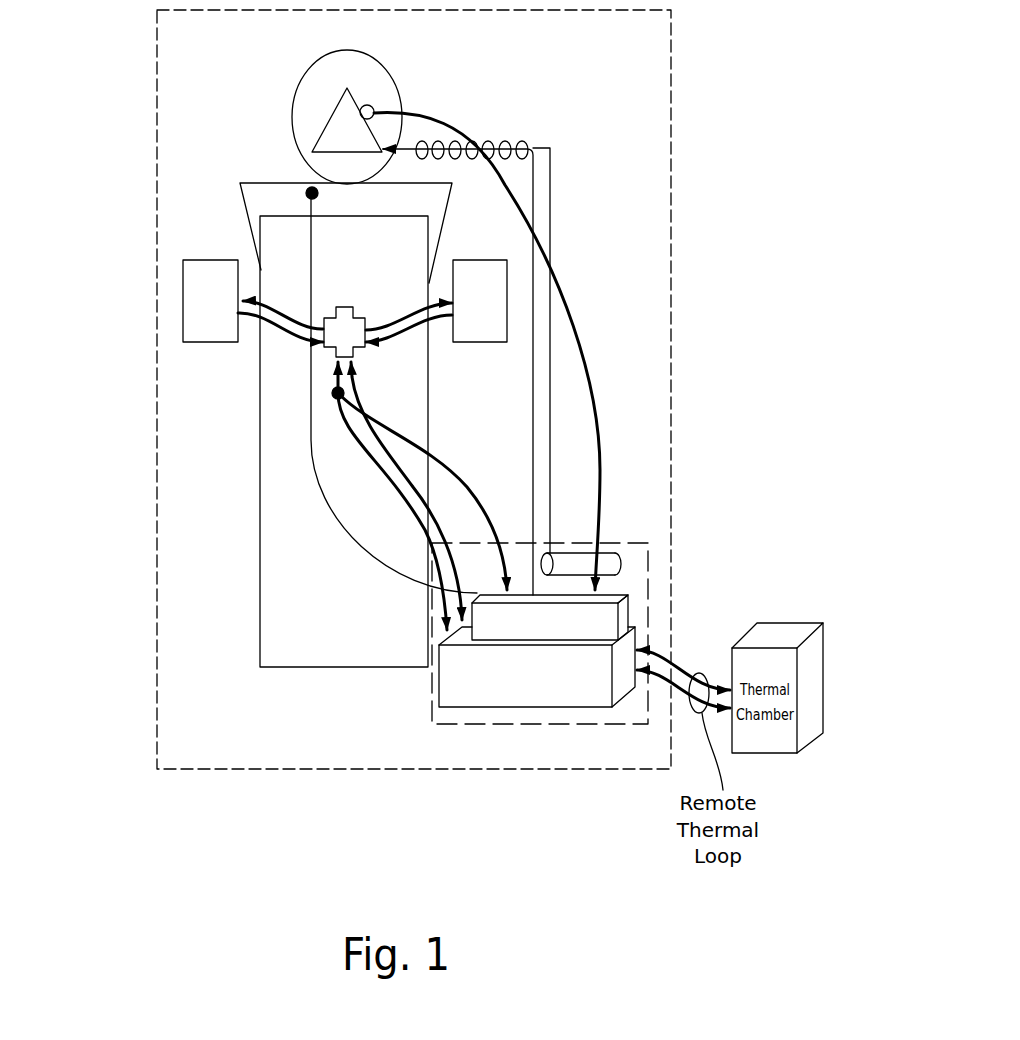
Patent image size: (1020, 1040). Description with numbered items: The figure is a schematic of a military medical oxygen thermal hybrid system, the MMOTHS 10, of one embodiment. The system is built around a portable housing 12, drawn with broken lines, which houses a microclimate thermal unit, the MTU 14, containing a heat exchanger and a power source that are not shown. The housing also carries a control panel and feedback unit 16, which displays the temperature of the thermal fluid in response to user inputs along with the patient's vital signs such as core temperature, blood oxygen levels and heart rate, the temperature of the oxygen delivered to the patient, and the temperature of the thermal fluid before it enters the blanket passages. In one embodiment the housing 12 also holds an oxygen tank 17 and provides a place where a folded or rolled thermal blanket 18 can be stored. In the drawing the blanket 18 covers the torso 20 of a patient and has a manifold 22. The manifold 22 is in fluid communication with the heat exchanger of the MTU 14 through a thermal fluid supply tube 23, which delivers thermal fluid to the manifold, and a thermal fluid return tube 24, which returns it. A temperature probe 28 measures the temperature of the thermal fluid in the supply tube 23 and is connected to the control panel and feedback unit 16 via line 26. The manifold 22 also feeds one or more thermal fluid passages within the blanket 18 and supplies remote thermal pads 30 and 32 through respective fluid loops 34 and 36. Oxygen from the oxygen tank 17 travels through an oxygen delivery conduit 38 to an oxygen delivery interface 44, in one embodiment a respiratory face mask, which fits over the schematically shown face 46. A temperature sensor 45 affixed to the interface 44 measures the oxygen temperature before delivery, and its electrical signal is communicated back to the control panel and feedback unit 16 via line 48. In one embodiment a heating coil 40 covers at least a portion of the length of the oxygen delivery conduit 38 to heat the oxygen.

The MMOTHS 10 is at (229, 573).
The portable housing 12 is at (587, 727).
The MTU 14 is at (475, 708).
The control panel and feedback unit 16 is at (627, 613).
The oxygen tank 17 is at (612, 547).
The thermal blanket 18 is at (260, 500).
The torso 20 is at (243, 182).
The manifold 22 is at (365, 315).
The thermal fluid supply tube 23 is at (352, 437).
The thermal fluid return tube 24 is at (393, 470).
The line 26 is at (447, 458).
The temperature probe 28 is at (342, 391).
The remote thermal pad 30 is at (210, 301).
The remote thermal pad 32 is at (480, 301).
The fluid loop 34 is at (277, 307).
The fluid loop 36 is at (402, 318).
The oxygen delivery conduit 38 is at (550, 387).
The heating coil 40 is at (500, 141).
The oxygen delivery interface 44 is at (323, 134).
The temperature sensor 45 is at (368, 104).
The face 46 is at (293, 85).
The line 48 is at (445, 117).